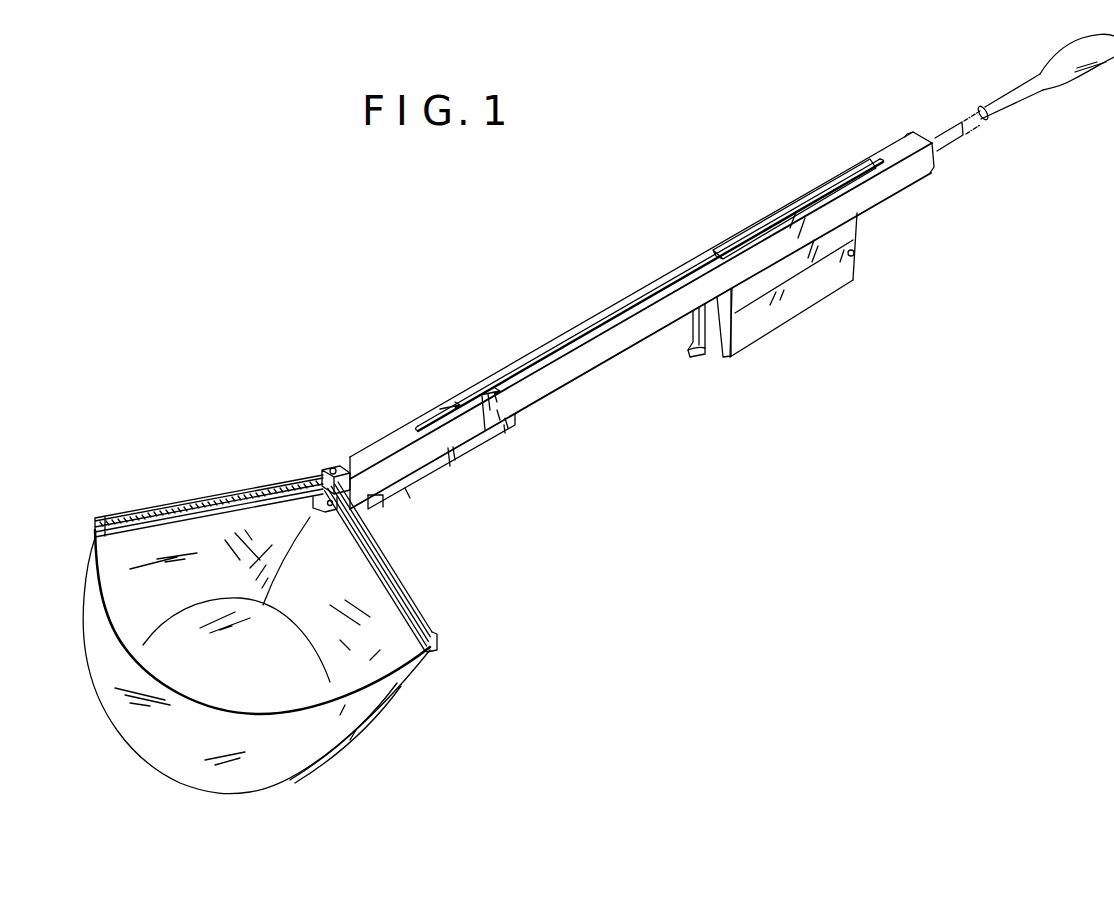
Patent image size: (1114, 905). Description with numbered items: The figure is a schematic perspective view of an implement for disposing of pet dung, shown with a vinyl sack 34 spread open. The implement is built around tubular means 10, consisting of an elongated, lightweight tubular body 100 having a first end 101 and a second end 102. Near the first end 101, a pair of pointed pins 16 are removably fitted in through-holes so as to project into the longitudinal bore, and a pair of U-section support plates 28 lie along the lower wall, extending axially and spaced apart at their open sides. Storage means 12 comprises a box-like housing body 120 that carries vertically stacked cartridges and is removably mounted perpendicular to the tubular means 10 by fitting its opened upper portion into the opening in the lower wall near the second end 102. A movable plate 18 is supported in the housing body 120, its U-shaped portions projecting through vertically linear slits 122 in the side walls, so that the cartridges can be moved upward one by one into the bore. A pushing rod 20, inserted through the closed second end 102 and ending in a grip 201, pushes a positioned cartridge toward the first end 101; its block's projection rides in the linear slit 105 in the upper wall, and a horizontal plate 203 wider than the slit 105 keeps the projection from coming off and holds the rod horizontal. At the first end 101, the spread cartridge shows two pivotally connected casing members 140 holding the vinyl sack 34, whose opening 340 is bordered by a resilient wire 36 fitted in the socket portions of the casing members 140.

The tubular means 10 is at (400, 421).
The tubular body 100 is at (392, 443).
The linear slit 105 is at (568, 342).
The second end 102 is at (907, 145).
The pushing rod 20 is at (995, 101).
The grip 201 is at (1080, 62).
The horizontal plate 203 is at (786, 212).
The housing body 120 is at (850, 240).
The storage means 12 is at (770, 330).
The slit 122 is at (693, 330).
The movable plate 18 is at (693, 357).
The support plates 28 is at (478, 448).
The pins 16 is at (333, 468).
The first end 101 is at (322, 472).
The casing members 140 is at (200, 502).
The opening 340 is at (175, 540).
The resilient wire 36 is at (130, 655).
The vinyl sack 34 is at (155, 762).